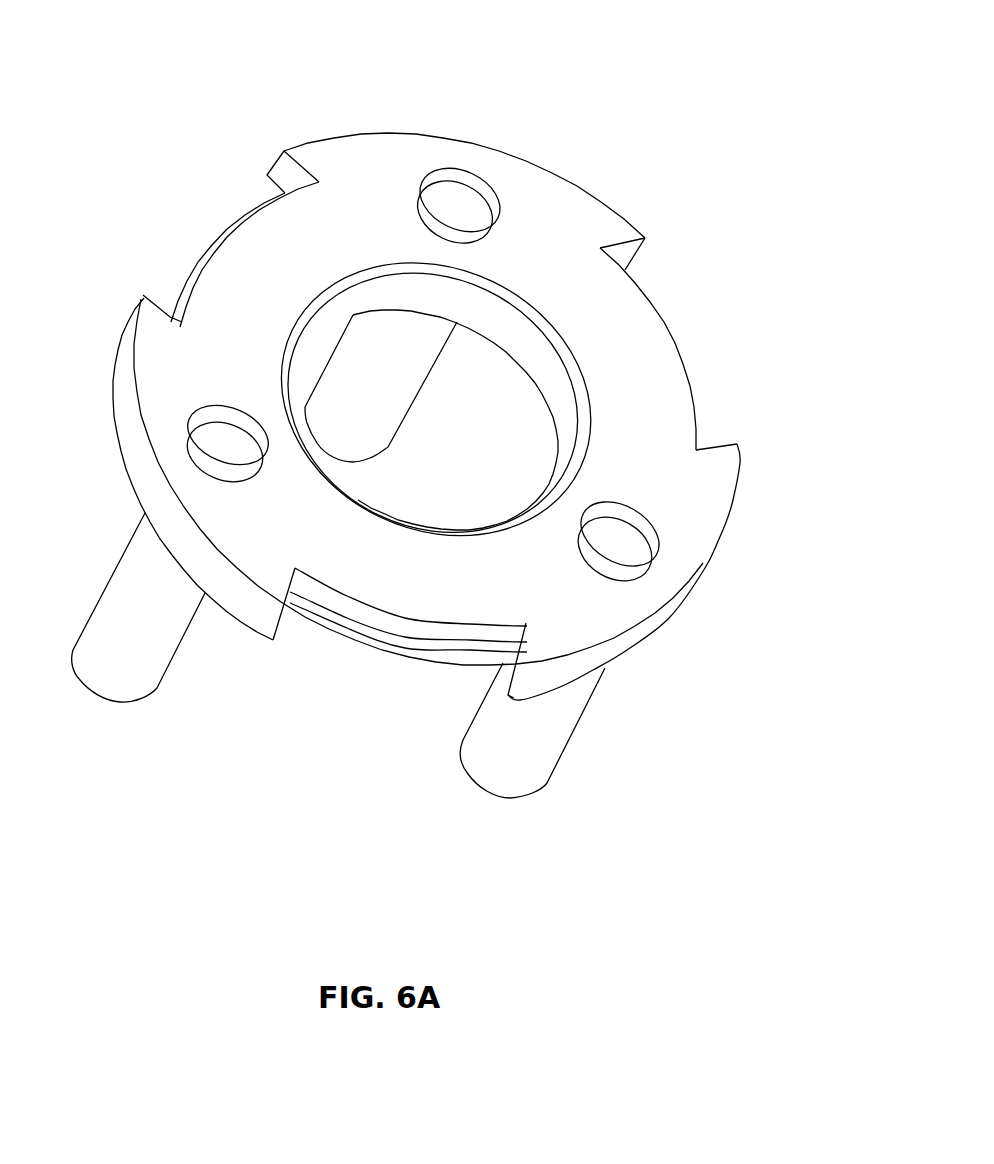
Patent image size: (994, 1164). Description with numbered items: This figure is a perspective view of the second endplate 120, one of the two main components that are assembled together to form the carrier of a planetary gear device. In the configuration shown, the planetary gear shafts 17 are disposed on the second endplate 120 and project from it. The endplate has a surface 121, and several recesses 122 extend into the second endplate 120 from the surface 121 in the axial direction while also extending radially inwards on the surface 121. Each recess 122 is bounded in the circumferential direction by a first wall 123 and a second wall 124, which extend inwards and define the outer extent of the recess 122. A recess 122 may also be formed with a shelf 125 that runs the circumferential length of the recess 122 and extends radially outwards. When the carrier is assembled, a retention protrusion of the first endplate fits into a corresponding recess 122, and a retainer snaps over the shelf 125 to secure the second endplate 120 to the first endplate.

The second endplate 120 is at (627, 80).
The surface 121 is at (713, 490).
The recess 122 is at (208, 247).
The first wall 123 is at (288, 168).
The second wall 124 is at (145, 297).
The shelf 125 is at (363, 645).
The planetary gear shafts 17 is at (152, 662).